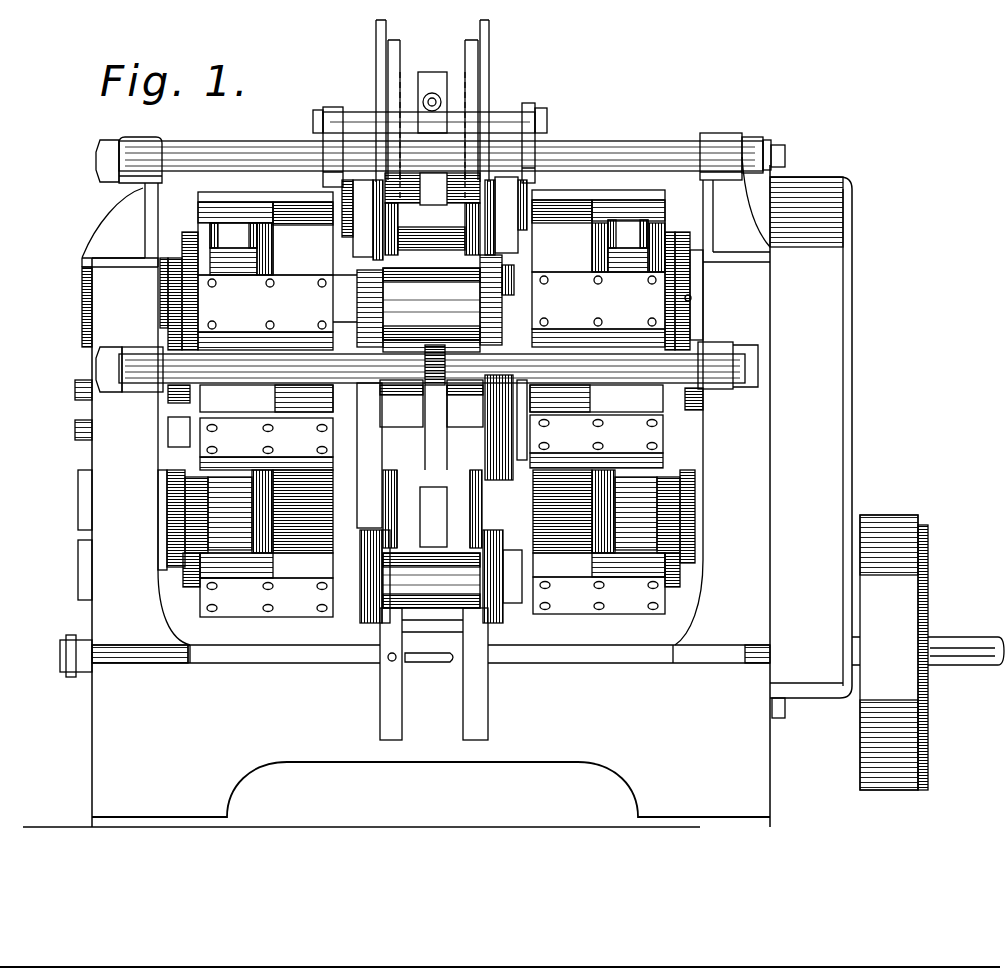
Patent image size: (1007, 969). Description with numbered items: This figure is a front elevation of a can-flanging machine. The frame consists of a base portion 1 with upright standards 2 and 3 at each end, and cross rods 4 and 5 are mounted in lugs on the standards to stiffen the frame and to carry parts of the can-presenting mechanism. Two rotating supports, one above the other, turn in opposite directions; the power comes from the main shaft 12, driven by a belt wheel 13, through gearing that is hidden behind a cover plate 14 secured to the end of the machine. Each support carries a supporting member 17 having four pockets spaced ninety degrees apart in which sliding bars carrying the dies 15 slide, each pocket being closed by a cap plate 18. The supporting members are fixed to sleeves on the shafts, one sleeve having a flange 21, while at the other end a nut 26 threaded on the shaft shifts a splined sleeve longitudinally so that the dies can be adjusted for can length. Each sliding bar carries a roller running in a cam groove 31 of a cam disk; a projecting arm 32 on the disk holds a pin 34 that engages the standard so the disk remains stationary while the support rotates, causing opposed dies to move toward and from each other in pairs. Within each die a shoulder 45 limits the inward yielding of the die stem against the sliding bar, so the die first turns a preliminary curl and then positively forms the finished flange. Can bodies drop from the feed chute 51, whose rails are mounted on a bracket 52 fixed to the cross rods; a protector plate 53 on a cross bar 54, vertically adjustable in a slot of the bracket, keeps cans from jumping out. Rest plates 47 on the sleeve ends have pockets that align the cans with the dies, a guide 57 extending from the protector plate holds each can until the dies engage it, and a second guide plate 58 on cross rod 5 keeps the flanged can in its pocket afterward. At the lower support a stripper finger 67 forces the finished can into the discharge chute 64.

The base portion 1 is at (396, 496).
The upright standard 2 is at (136, 414).
The upright standard 3 is at (722, 401).
The cross rod 4 is at (618, 152).
The cross rod 5 is at (238, 370).
The main shaft 12 is at (935, 636).
The belt wheel 13 is at (890, 652).
The cover plate 14 is at (811, 447).
The die 15 is at (360, 290).
The supporting member 17 is at (431, 371).
The cap plate 18 is at (431, 444).
The flange 21 is at (676, 240).
The nut 26 is at (168, 293).
The cam groove 31 is at (630, 260).
The projecting arm 32 is at (170, 398).
The pin 34 is at (76, 432).
The shoulder 45 is at (485, 290).
The rest plate 47 is at (432, 375).
The feed chute 51 is at (490, 58).
The bracket 52 is at (335, 107).
The protector plate 53 is at (431, 80).
The cross bar 54 is at (496, 112).
The guide 57 is at (436, 206).
The second guide plate 58 is at (445, 412).
The discharge chute 64 is at (465, 685).
The stripper finger 67 is at (434, 517).